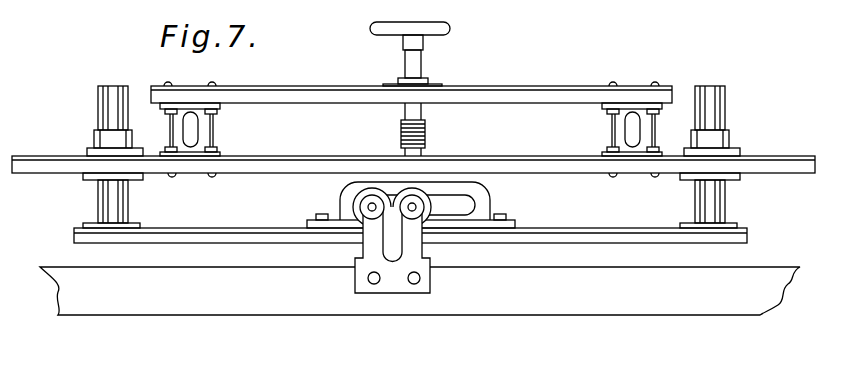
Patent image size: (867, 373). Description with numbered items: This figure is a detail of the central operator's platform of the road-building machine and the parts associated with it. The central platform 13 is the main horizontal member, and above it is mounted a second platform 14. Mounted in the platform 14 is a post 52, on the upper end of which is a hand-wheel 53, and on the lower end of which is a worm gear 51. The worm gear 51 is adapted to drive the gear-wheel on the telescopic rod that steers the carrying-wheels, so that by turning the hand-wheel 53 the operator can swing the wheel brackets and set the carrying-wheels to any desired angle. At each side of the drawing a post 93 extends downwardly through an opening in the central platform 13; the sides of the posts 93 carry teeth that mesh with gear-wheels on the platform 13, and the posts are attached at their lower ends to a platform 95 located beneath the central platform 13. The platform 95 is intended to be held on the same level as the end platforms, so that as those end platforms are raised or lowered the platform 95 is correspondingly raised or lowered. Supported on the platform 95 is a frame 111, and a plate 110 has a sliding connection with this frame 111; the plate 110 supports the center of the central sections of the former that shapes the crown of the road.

The central platform 13 is at (548, 166).
The platform 14 is at (543, 96).
The worm gear 51 is at (401, 135).
The post 52 is at (405, 62).
The hand-wheel 53 is at (450, 29).
The post 93 is at (123, 200).
The platform 95 is at (568, 237).
The plate 110 is at (422, 270).
The frame 111 is at (478, 197).